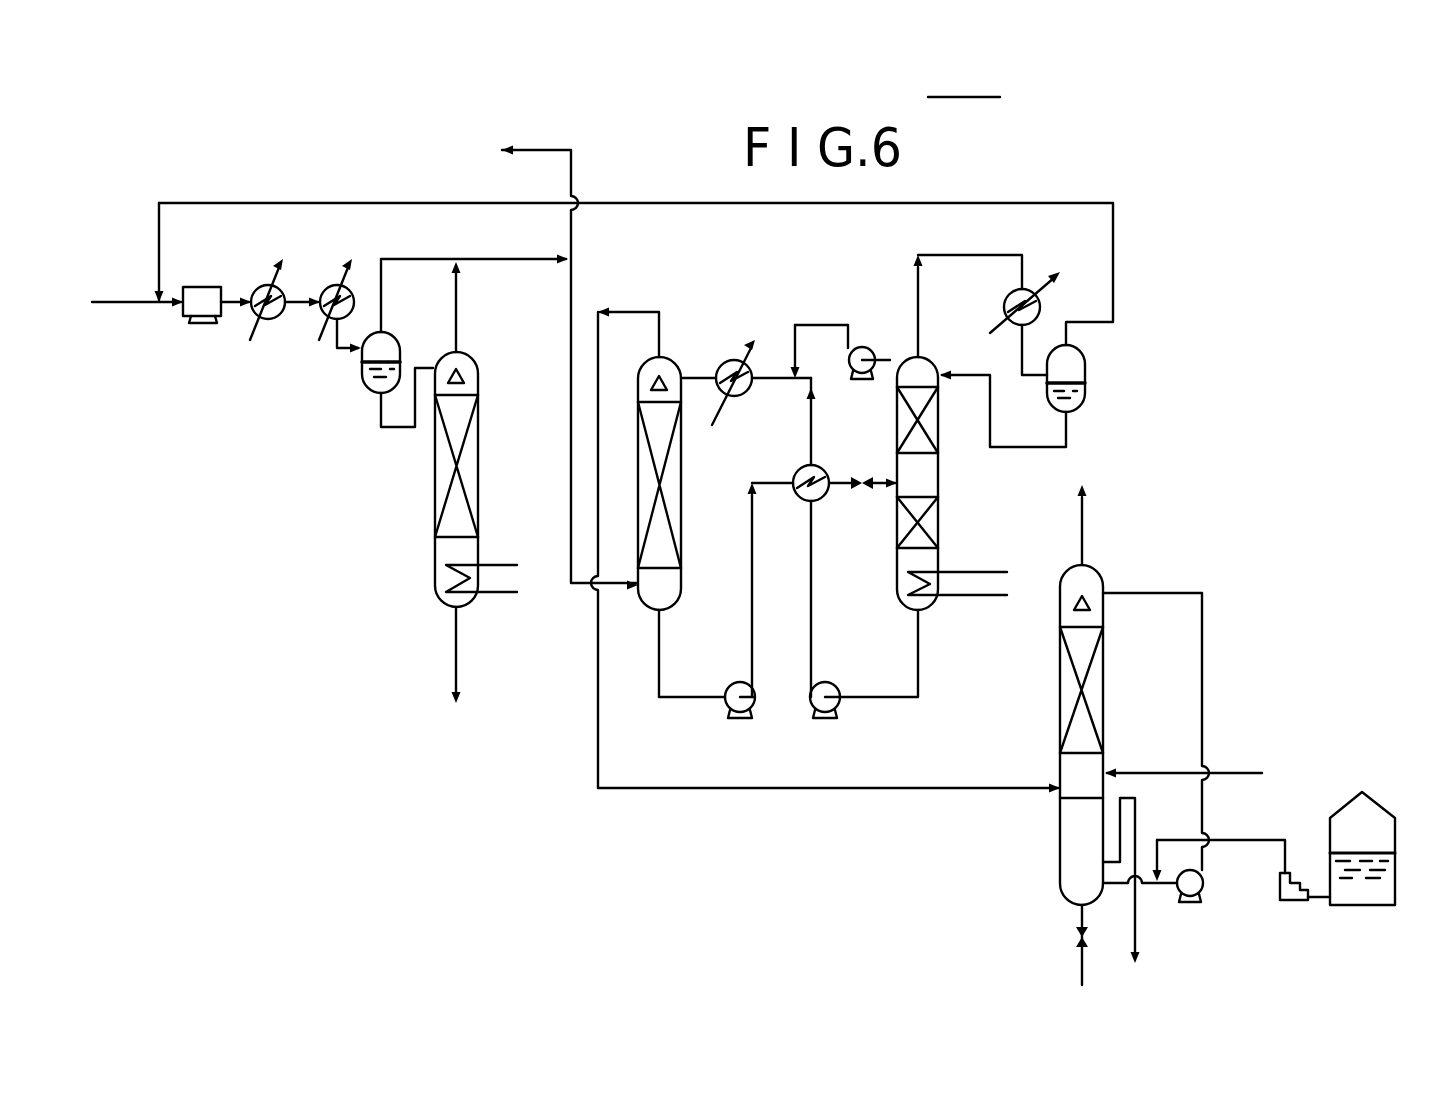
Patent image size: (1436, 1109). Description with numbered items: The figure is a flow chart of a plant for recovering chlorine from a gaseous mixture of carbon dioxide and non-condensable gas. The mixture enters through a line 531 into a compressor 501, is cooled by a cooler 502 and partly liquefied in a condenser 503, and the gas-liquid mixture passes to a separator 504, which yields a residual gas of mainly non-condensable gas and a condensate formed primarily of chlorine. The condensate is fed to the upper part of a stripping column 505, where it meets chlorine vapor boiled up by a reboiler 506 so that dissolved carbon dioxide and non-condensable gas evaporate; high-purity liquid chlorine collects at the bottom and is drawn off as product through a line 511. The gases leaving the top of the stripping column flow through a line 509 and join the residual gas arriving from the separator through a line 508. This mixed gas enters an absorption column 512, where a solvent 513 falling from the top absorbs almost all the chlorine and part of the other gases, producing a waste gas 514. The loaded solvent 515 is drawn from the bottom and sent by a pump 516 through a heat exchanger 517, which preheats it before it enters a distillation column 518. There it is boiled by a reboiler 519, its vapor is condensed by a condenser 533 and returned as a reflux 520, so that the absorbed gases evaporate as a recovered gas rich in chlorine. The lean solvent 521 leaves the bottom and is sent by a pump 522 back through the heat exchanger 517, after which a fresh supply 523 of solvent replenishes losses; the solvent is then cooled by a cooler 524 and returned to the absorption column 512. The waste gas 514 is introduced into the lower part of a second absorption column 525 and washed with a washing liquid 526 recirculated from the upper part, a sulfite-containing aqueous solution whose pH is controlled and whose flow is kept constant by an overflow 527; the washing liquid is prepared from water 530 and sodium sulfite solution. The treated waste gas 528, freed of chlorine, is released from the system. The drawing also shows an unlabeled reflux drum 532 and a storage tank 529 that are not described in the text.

The compressor 501 is at (198, 287).
The cooler 502 is at (262, 284).
The condenser 503 is at (331, 284).
The separator 504 is at (362, 391).
The stripping column 505 is at (479, 480).
The reboiler 506 is at (502, 593).
The line 508 is at (428, 258).
The line 509 is at (457, 320).
The line 511 is at (454, 667).
The absorption column 512 is at (682, 490).
The solvent 513 is at (704, 377).
The waste gas 514 is at (825, 537).
The solvent 515 is at (661, 659).
The pump 516 is at (746, 712).
The heat exchanger 517 is at (824, 500).
The distillation column 518 is at (940, 522).
The reboiler 519 is at (980, 597).
The reflux 520 is at (1003, 413).
The solvent 521 is at (920, 680).
The pump 522 is at (842, 704).
The fresh supply of the solvent 523 is at (866, 347).
The cooler 524 is at (750, 396).
The absorption column 525 is at (1059, 870).
The washing liquid 526 is at (1180, 593).
The overflow 527 is at (1140, 912).
The waste gas 528 is at (1084, 531).
The storage tank 529 is at (1355, 855).
The water 530 is at (1242, 772).
The line 531 is at (130, 304).
The reflux drum 532 is at (1086, 369).
The condenser 533 is at (1004, 298).